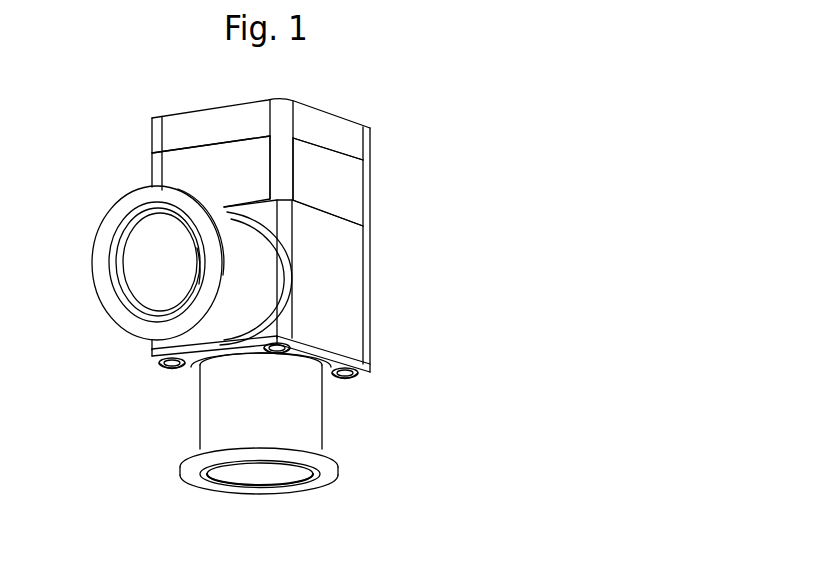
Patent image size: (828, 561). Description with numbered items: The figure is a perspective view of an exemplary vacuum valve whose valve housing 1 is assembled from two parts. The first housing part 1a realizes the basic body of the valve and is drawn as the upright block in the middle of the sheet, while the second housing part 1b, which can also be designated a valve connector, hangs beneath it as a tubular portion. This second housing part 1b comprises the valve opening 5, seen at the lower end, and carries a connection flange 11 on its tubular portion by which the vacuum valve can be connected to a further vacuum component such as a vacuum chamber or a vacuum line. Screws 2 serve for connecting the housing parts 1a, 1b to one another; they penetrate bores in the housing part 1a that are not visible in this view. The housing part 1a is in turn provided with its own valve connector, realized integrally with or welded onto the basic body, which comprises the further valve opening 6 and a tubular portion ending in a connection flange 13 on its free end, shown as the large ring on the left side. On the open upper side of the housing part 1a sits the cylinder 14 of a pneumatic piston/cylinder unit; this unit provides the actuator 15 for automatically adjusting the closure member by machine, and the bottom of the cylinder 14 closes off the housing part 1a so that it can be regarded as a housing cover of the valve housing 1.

The valve housing 1 is at (446, 291).
The first housing part 1a is at (348, 260).
The second housing part 1b is at (207, 418).
The screws 2 is at (162, 364).
The valve opening 5 is at (260, 472).
The further valve opening 6 is at (165, 283).
The connection flange 11 is at (328, 480).
The connection flange 13 is at (118, 222).
The cylinder 14 is at (352, 193).
The actuator 15 is at (398, 136).